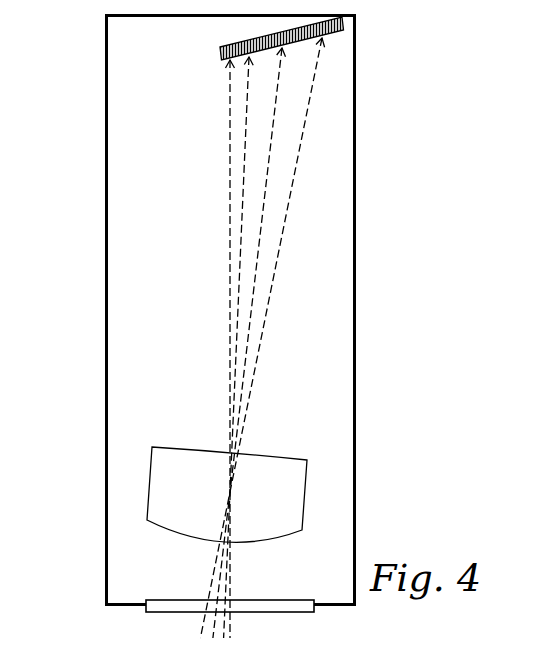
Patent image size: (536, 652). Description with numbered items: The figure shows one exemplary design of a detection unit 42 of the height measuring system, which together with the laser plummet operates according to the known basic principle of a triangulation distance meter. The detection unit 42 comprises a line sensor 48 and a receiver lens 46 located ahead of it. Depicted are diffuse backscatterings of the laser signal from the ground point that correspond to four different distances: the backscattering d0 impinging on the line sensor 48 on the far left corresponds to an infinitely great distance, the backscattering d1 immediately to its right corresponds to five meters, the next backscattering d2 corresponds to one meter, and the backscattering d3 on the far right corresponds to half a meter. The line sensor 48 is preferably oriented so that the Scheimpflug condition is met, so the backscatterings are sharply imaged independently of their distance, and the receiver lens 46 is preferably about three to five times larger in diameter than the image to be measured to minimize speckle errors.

The detection unit 42 is at (88, 41).
The receiver lens 46 is at (183, 463).
The line sensor 48 is at (255, 43).
The backscattering d0 is at (194, 349).
The backscattering d1 is at (203, 347).
The backscattering d2 is at (220, 343).
The backscattering d3 is at (239, 338).